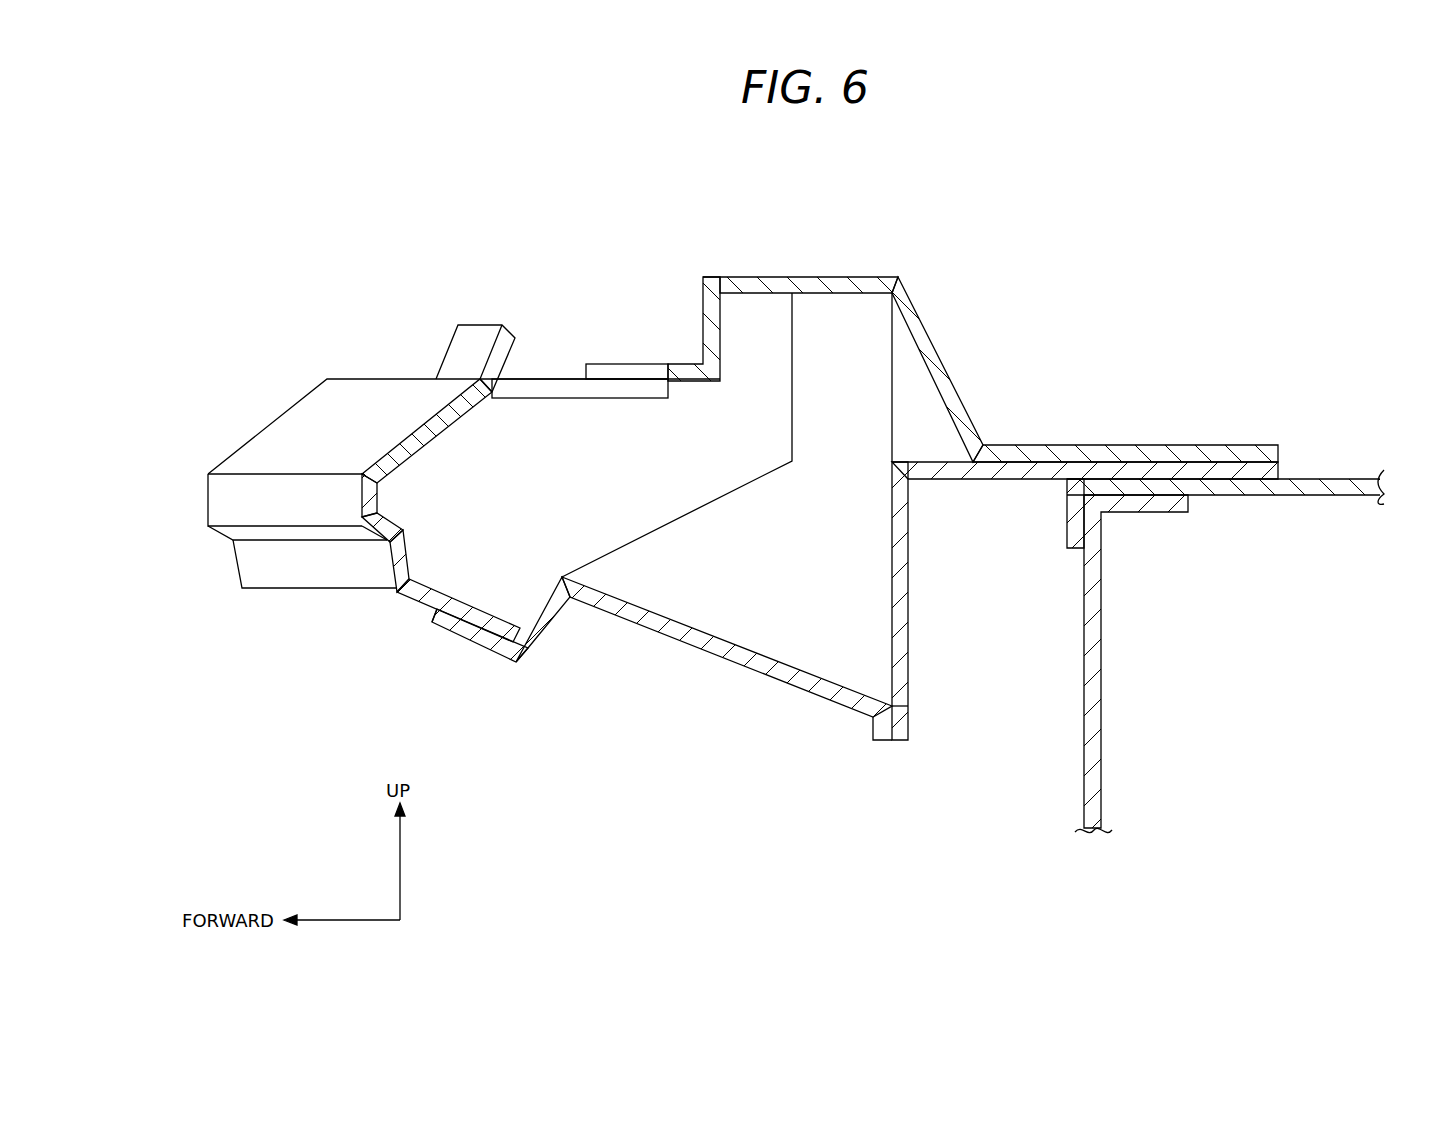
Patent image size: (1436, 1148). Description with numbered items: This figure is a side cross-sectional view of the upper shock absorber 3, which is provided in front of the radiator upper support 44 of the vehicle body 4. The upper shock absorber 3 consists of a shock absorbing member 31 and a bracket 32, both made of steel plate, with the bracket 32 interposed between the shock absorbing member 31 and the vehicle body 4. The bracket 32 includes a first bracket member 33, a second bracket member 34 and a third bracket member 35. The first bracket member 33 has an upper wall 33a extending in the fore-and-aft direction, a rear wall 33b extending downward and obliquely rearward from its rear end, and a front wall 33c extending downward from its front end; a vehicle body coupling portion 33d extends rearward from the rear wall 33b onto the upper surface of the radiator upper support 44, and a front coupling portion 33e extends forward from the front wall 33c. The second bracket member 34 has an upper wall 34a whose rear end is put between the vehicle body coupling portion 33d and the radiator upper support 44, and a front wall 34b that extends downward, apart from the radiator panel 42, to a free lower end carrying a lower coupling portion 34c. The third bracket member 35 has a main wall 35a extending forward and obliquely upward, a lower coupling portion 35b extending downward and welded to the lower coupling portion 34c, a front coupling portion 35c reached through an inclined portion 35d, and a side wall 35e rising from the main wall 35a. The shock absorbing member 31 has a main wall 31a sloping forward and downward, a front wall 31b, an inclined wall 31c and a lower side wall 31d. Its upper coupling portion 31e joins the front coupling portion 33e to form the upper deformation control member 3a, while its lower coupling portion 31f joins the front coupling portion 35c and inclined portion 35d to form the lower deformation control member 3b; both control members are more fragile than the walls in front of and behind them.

The upper shock absorber 3 is at (410, 265).
The upper deformation control member 3a is at (613, 283).
The lower deformation control member 3b is at (480, 647).
The shock absorbing member 31 is at (357, 403).
The main wall 31a is at (438, 428).
The front wall 31b is at (374, 497).
The inclined wall 31c is at (394, 528).
The lower side wall 31d is at (406, 559).
The upper coupling portion 31e is at (603, 392).
The lower coupling portion 31f is at (447, 630).
The bracket 32 is at (1000, 247).
The first bracket member 33 is at (895, 290).
The upper wall 33a is at (792, 287).
The rear wall 33b is at (928, 337).
The front wall 33c is at (712, 335).
The vehicle body coupling portion 33d is at (1196, 440).
The front coupling portion 33e is at (648, 372).
The second bracket member 34 is at (910, 593).
The upper wall 34a is at (1017, 476).
The front wall 34b is at (897, 540).
The lower coupling portion 34c is at (898, 720).
The third bracket member 35 is at (540, 630).
The main wall 35a is at (668, 630).
The lower coupling portion 35b is at (878, 727).
The front coupling portion 35c is at (470, 635).
The inclined portion 35d is at (560, 604).
The side wall 35e is at (665, 522).
The vehicle body 4 is at (1064, 602).
The radiator panel 42 is at (1088, 672).
The radiator upper support 44 is at (1338, 478).